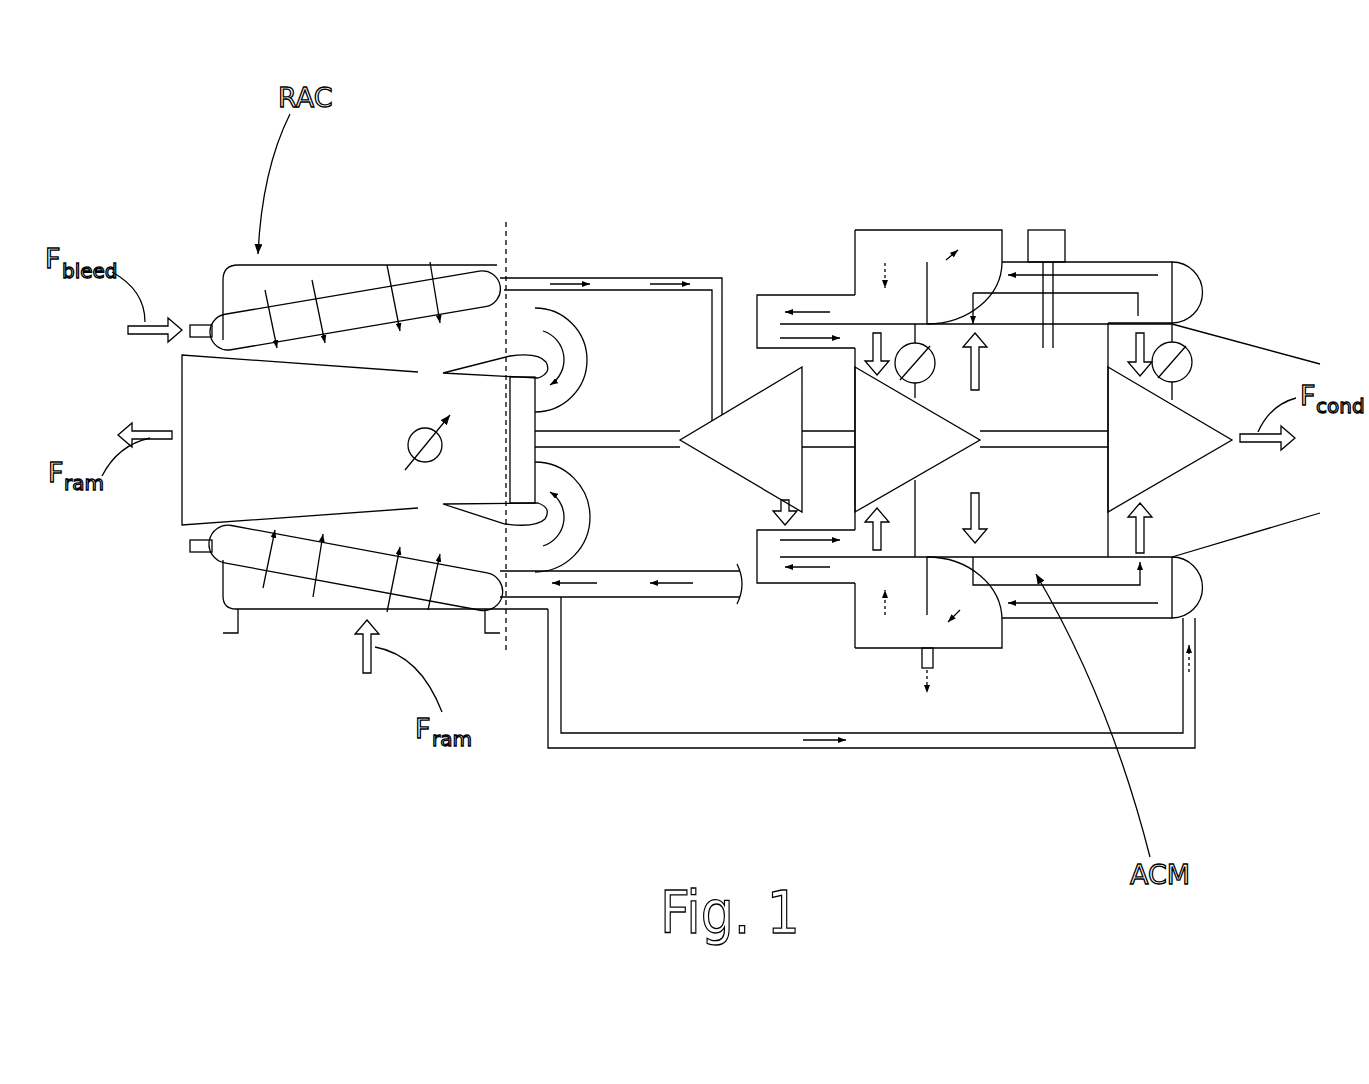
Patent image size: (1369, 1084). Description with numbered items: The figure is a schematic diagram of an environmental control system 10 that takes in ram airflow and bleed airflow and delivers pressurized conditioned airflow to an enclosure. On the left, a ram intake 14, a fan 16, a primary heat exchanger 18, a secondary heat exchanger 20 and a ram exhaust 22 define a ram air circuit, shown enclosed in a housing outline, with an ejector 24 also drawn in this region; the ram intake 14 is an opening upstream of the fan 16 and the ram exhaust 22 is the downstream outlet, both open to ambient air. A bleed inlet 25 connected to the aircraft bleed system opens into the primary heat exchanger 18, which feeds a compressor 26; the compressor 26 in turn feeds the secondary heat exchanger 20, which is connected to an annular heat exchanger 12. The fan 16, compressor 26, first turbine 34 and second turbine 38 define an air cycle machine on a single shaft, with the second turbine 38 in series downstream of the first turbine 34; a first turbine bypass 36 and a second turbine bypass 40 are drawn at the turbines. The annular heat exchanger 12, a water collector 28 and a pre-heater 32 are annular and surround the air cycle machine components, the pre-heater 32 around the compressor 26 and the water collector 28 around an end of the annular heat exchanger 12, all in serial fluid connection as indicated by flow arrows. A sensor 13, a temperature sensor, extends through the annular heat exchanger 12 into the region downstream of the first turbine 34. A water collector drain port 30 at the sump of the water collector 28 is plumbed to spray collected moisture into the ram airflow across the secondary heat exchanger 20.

The environmental control system 10 is at (688, 168).
The annular heat exchanger 12 is at (1130, 262).
The sensor 13 is at (1045, 230).
The ram intake 14 is at (290, 610).
The fan 16 is at (524, 503).
The primary heat exchanger 18 is at (352, 270).
The secondary heat exchanger 20 is at (342, 588).
The ram exhaust 22 is at (180, 477).
The ejector 24 is at (427, 428).
The bleed inlet 25 is at (202, 322).
The compressor 26 is at (745, 400).
The water collector 28 is at (913, 230).
The water collector drain port 30 is at (920, 657).
The pre-heater 32 is at (802, 295).
The first turbine 34 is at (855, 478).
The first turbine bypass 36 is at (927, 345).
The second turbine 38 is at (1202, 462).
The second turbine bypass 40 is at (1192, 360).